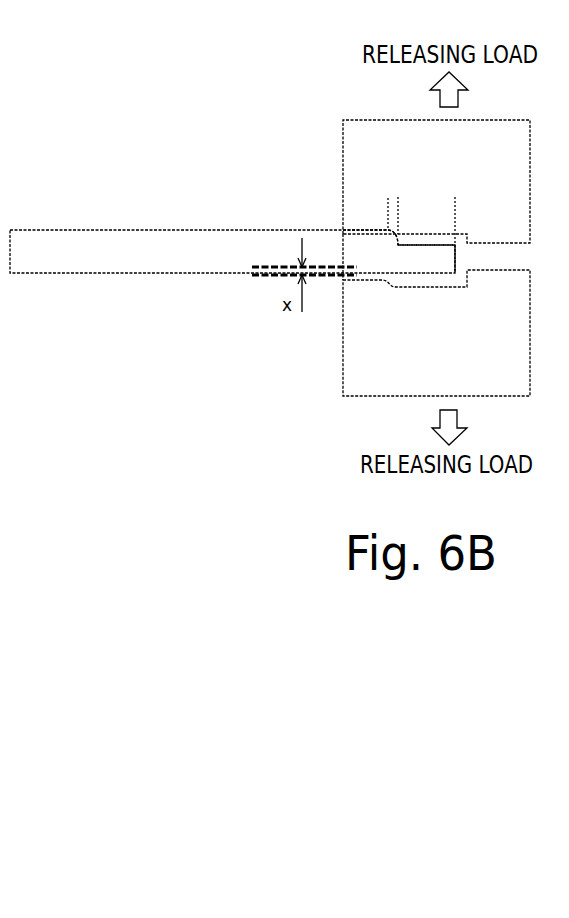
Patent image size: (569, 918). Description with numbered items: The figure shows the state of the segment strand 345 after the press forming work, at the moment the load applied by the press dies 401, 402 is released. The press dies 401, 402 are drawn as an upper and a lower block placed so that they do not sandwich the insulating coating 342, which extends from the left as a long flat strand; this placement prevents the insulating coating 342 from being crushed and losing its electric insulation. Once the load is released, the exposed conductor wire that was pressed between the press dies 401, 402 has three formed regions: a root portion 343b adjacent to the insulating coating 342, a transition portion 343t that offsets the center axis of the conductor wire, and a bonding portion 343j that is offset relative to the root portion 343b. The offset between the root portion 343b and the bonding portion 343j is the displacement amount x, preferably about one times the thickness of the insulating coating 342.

The segment strand 345 is at (158, 213).
The insulating coating 342 is at (198, 268).
The root portion 343b is at (368, 201).
The transition portion 343t is at (393, 196).
The bonding portion 343j is at (426, 235).
The press die 401 is at (355, 149).
The press die 402 is at (352, 373).